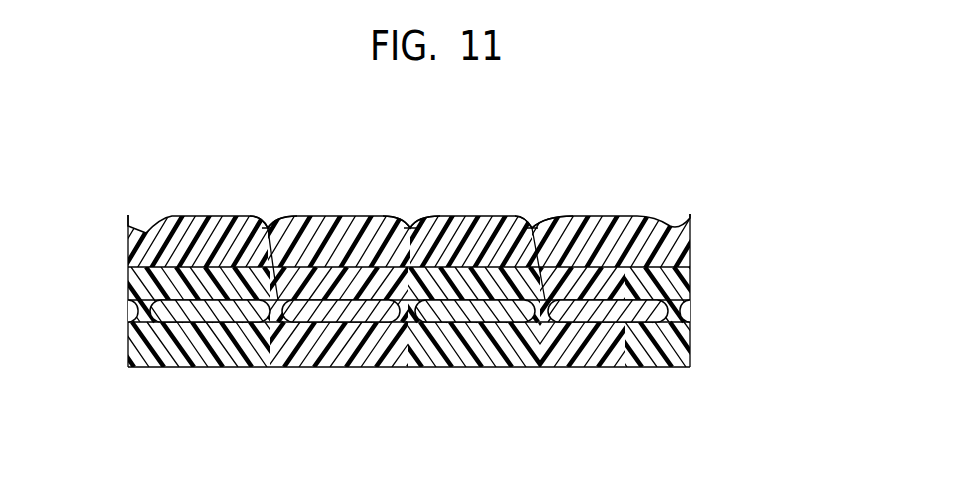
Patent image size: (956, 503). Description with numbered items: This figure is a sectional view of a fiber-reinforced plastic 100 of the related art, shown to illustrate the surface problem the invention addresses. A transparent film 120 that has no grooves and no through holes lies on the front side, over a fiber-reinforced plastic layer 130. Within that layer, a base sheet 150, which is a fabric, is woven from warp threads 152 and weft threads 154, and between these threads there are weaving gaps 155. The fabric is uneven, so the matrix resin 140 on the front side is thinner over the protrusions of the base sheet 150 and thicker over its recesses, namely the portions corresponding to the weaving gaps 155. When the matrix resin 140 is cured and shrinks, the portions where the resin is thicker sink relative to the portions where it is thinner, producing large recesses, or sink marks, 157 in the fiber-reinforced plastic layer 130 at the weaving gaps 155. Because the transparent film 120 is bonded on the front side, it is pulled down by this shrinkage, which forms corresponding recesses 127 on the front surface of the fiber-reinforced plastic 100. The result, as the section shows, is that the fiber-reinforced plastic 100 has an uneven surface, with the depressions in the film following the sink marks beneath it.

The fiber-reinforced plastic 100 is at (621, 130).
The transparent film 120 is at (640, 236).
The recesses 127 is at (288, 220).
The fiber-reinforced plastic layer 130 is at (698, 267).
The matrix resin 140 is at (131, 368).
The base sheet 150 is at (647, 421).
The warp threads 152 is at (230, 310).
The weft threads 154 is at (352, 330).
The weaving gaps 155 is at (280, 302).
The recesses (sink marks) 157 is at (268, 228).